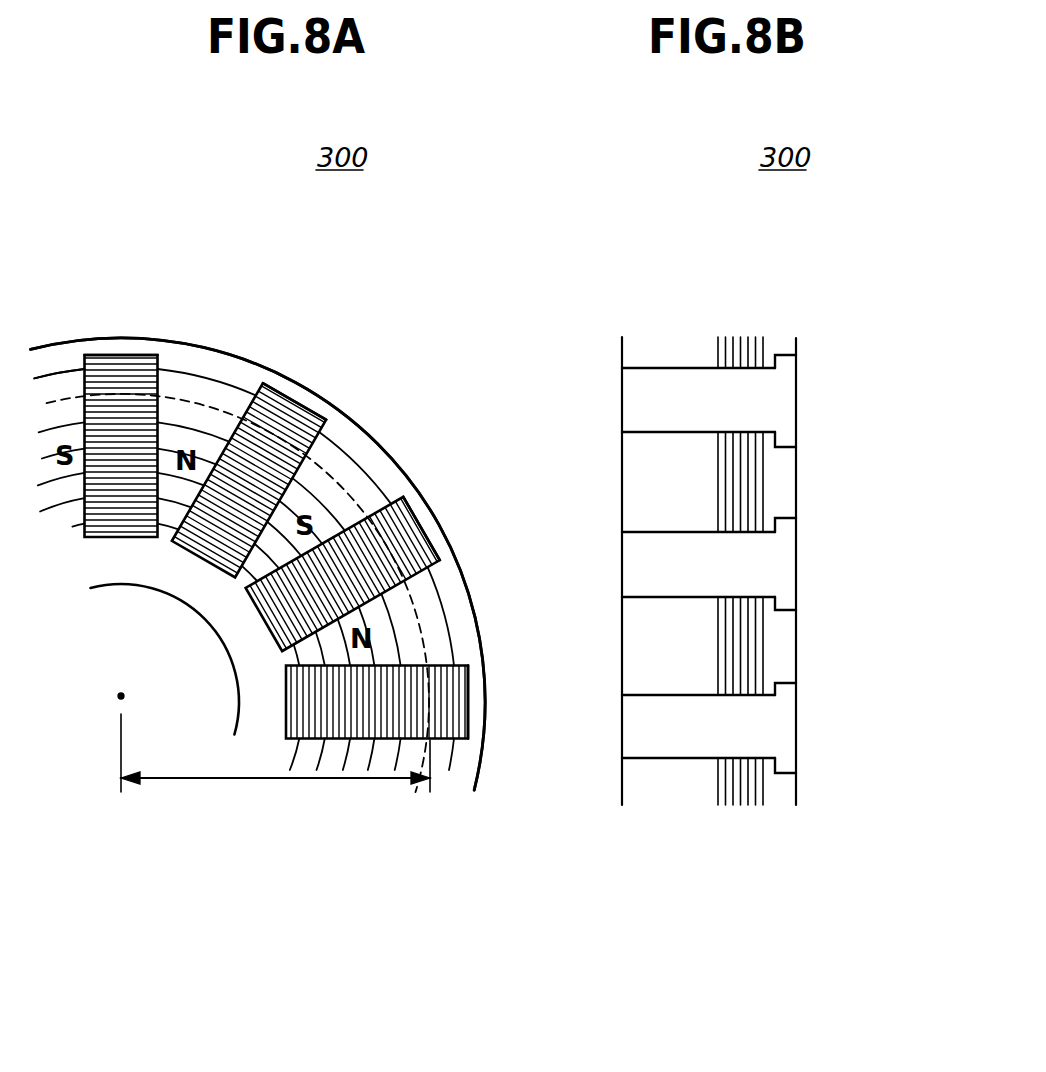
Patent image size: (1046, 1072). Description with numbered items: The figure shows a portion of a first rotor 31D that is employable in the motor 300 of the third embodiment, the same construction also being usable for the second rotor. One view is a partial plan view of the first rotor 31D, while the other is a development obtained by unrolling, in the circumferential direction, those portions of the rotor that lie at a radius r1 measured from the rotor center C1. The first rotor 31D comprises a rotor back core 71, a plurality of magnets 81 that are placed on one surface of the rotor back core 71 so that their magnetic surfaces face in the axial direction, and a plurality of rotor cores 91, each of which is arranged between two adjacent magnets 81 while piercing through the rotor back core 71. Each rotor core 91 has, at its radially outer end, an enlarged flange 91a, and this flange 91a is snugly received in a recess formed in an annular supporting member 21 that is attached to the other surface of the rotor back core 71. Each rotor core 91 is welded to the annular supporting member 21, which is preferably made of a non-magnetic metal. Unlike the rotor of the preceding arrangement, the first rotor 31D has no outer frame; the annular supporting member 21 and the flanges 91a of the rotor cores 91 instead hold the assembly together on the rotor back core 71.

In FIG. 8A, the motor 300 is at (233, 593).
In FIG. 8A, the magnet 81 is at (53, 362).
In FIG. 8B, the magnet 81 is at (653, 357).
In FIG. 8A, the annular supporting member 21 is at (59, 373).
In FIG. 8B, the annular supporting member 21 is at (780, 650).
In FIG. 8A, the rotor core 91 is at (110, 402).
In FIG. 8B, the rotor core 91 is at (752, 401).
In FIG. 8A, the enlarged flange 91a is at (143, 360).
In FIG. 8B, the enlarged flange 91a is at (790, 366).
In FIG. 8A, the first rotor 31D is at (335, 365).
In FIG. 8B, the first rotor 31D is at (750, 280).
In FIG. 8A, the rotor back core 71 is at (222, 615).
In FIG. 8B, the rotor back core 71 is at (750, 338).
In FIG. 8A, the center C1 is at (118, 696).
In FIG. 8A, the radius r1 is at (275, 765).